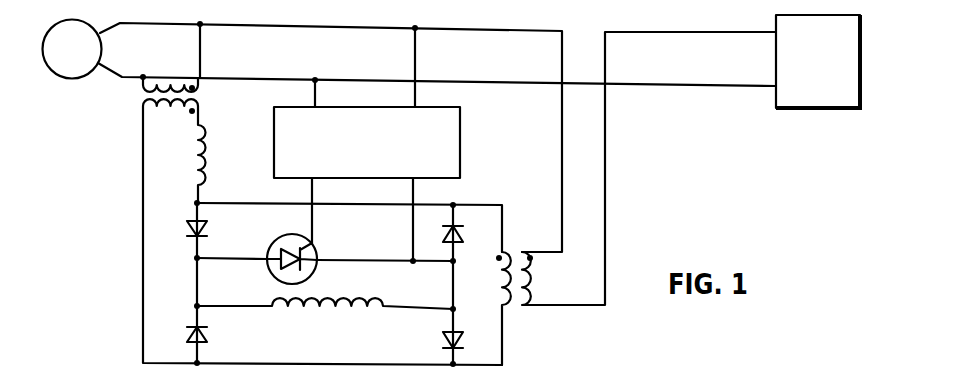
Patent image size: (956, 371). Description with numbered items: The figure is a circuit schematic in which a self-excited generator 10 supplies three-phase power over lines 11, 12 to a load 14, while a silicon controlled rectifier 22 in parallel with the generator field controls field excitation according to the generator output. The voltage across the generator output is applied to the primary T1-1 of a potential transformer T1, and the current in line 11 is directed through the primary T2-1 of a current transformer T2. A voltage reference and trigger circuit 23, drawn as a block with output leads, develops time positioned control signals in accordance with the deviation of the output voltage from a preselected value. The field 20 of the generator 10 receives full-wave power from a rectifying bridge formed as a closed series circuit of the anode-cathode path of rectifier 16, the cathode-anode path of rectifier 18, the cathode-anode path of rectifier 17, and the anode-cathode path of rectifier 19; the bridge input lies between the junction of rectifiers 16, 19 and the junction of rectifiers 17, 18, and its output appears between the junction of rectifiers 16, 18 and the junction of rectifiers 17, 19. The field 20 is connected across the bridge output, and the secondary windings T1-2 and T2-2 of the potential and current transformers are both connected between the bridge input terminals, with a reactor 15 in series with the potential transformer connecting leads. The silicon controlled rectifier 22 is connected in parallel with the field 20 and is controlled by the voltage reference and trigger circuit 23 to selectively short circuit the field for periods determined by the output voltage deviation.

The generator 10 is at (70, 80).
The line 11 is at (174, 27).
The line 12 is at (122, 81).
The load 14 is at (776, 97).
The reactor 15 is at (206, 168).
The rectifier 16 is at (187, 229).
The rectifier 17 is at (464, 339).
The rectifier 18 is at (187, 331).
The rectifier 19 is at (464, 231).
The field 20 is at (338, 336).
The silicon controlled rectifier 22 is at (283, 240).
The voltage reference and trigger circuit 23 is at (461, 146).
The potential transformer T1 is at (153, 95).
The primary winding of potential transformer T1-1 is at (184, 77).
The secondary winding of potential transformer T1-2 is at (143, 110).
The current transformer T2 is at (636, 198).
The primary winding of current transformer T2-1 is at (530, 292).
The secondary winding of current transformer T2-2 is at (508, 306).